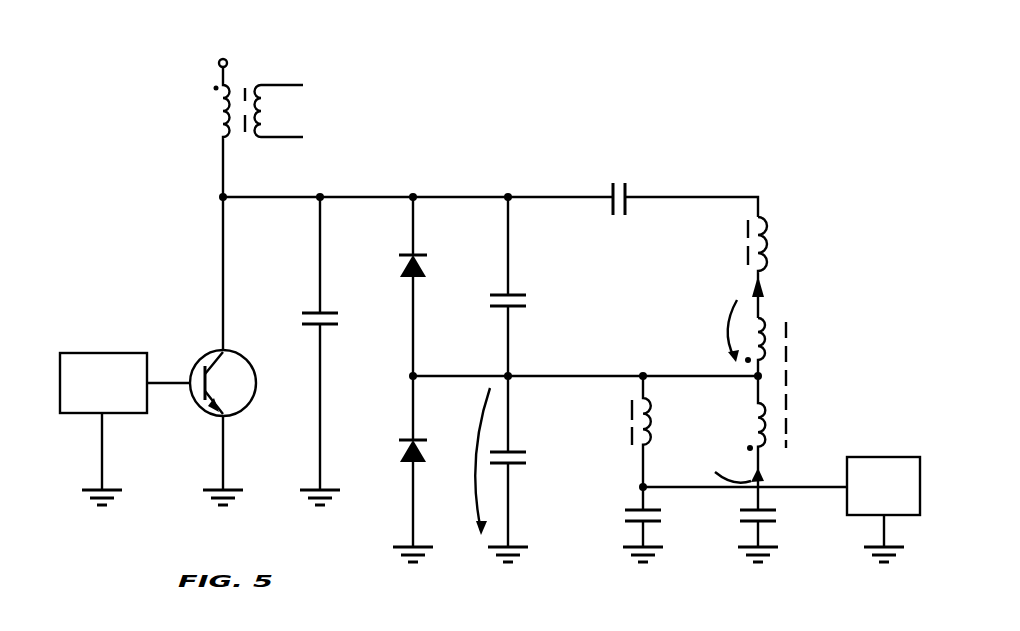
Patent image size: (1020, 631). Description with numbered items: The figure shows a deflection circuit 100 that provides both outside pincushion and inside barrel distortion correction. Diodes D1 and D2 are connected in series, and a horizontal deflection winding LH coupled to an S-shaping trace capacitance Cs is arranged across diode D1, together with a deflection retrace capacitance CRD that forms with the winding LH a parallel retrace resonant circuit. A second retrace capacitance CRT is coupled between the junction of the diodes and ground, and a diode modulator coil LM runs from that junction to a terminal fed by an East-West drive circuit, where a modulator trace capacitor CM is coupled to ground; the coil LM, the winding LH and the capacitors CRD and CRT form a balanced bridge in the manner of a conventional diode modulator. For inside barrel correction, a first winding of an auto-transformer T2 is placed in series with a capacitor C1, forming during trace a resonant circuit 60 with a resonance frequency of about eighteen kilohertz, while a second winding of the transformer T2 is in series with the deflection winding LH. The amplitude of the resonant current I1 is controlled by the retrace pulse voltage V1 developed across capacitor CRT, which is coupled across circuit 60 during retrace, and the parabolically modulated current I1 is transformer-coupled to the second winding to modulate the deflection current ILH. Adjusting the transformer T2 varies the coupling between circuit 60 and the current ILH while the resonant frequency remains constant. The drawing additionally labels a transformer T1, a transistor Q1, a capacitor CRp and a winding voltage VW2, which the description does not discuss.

The deflection circuit 100 is at (508, 611).
The resonant circuit 60 is at (816, 476).
The high voltage transformer T1 is at (218, 180).
The horizontal output transistor Q1 is at (195, 393).
The diode D1 is at (392, 286).
The diode D2 is at (395, 469).
The auto-transformer T2 is at (785, 393).
The capacitor C1 is at (784, 527).
The modulator trace capacitor CM is at (669, 530).
The primary retrace capacitor CRp is at (298, 351).
The deflection retrace capacitance CRD is at (535, 286).
The modulator retrace capacitor CRT is at (535, 469).
The trace capacitance Cs is at (619, 185).
The horizontal deflection winding LH is at (811, 267).
The diode modulator coil LM is at (678, 443).
The retrace pulse voltage V1 is at (465, 461).
The winding W2 voltage VW2 is at (707, 331).
The deflection current ILH is at (779, 280).
The resonant current I1 is at (731, 475).